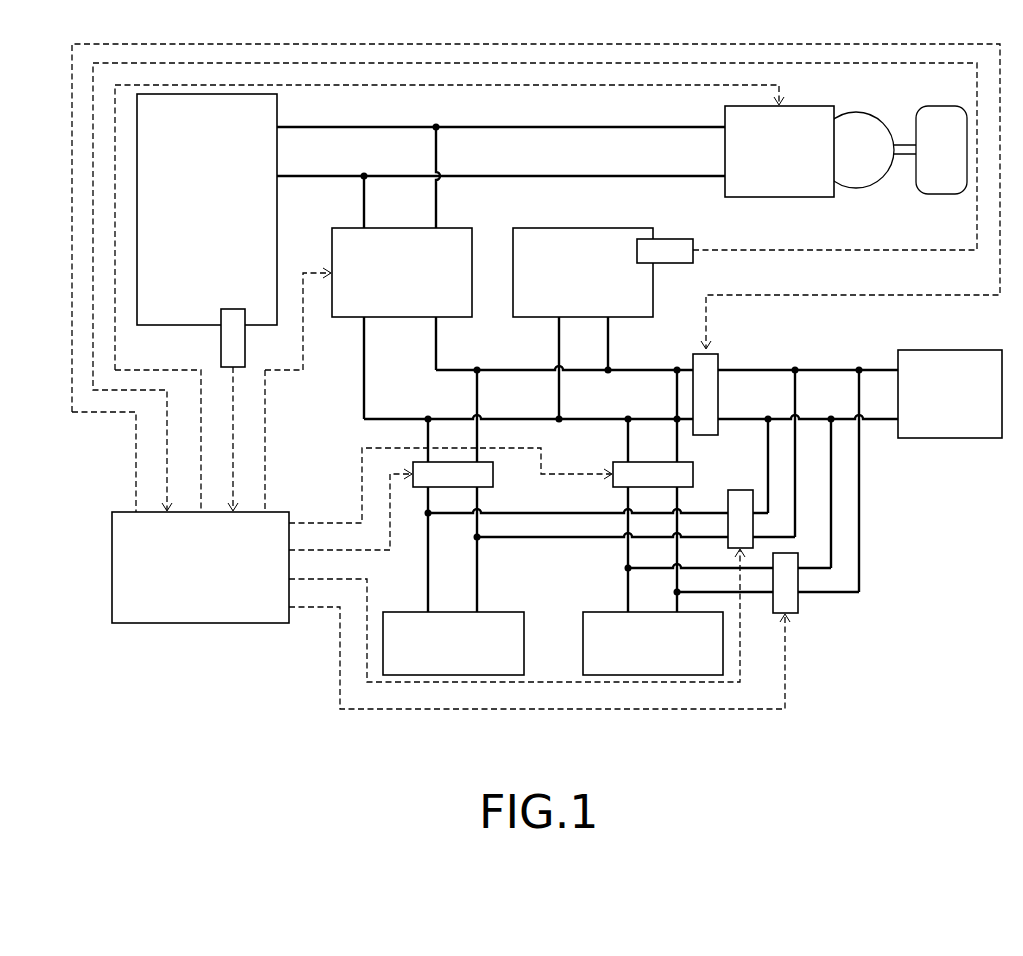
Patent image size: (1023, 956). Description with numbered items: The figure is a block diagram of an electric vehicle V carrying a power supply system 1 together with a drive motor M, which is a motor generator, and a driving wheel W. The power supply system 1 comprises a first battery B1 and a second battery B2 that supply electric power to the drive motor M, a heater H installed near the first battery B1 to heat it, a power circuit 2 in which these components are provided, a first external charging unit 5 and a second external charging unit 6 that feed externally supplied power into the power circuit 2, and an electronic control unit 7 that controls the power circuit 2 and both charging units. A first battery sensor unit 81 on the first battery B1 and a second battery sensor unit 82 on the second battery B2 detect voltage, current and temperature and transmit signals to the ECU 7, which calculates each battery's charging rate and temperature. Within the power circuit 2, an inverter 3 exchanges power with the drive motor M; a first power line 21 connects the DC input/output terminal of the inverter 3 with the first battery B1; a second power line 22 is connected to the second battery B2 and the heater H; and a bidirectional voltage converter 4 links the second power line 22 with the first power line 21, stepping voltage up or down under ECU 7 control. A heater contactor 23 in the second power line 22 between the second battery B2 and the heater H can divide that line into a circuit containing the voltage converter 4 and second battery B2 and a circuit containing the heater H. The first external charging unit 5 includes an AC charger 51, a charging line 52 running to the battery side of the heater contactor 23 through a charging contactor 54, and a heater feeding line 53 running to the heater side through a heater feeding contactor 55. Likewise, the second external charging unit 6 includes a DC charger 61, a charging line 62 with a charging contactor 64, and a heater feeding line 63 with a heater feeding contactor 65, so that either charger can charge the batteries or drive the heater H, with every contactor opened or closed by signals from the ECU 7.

The power supply system 1 is at (917, 529).
The power circuit 2 is at (535, 287).
The inverter 3 is at (818, 106).
The voltage converter 4 is at (450, 228).
The first external charging unit 5 is at (609, 569).
The second external charging unit 6 is at (527, 560).
The electronic control unit 7 is at (122, 514).
The first power line 21 is at (556, 127).
The second power line 22 is at (500, 370).
The heater contactor 23 is at (712, 354).
The AC charger 51 is at (595, 612).
The charging line 52 is at (626, 502).
The heater feeding line 53 is at (860, 496).
The charging contactor 54 is at (622, 462).
The heater feeding contactor 55 is at (798, 607).
The DC charger 61 is at (505, 612).
The charging line 62 is at (480, 556).
The heater feeding line 63 is at (766, 448).
The charging contactor 64 is at (493, 474).
The heater feeding contactor 65 is at (728, 490).
The first battery sensor unit 81 is at (221, 343).
The second battery sensor unit 82 is at (672, 239).
The first battery B1 is at (277, 100).
The second battery B2 is at (597, 228).
The drive motor M is at (877, 113).
The driving wheel W is at (945, 106).
The heater H is at (970, 350).
The vehicle V is at (1002, 643).